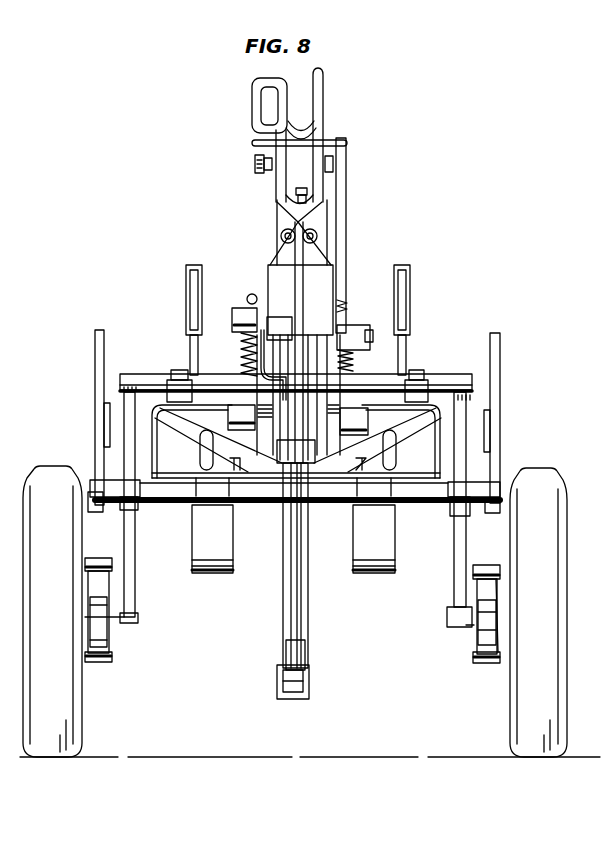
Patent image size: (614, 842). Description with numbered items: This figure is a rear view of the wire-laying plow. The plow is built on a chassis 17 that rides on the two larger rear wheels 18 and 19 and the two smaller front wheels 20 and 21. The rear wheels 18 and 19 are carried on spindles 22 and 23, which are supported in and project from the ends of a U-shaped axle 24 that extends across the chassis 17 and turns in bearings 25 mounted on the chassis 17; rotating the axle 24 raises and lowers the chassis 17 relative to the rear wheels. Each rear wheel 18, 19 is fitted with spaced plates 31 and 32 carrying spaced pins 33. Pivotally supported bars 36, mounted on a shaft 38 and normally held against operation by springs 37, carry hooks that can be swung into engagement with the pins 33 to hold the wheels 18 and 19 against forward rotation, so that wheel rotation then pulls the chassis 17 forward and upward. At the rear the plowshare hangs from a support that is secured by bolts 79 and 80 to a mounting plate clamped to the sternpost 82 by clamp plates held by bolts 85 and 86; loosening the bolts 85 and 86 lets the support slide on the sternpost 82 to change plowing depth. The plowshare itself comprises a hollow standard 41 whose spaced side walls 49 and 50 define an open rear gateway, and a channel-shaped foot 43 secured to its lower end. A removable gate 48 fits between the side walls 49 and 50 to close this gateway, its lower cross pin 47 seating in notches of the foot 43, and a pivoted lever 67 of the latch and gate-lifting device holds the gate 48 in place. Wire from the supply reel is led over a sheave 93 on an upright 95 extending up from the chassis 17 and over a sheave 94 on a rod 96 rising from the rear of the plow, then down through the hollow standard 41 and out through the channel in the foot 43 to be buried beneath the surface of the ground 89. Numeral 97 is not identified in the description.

The chassis 17 is at (450, 441).
The rear wheel 18 is at (560, 728).
The rear wheel 19 is at (81, 727).
The front wheel 20 is at (374, 573).
The front wheel 21 is at (208, 573).
The spindle 22 is at (448, 620).
The spindle 23 is at (136, 622).
The U-shaped axle 24 is at (138, 374).
The bearing 25 is at (176, 370).
The plate 31 is at (478, 635).
The plate 32 is at (496, 665).
The pin 33 is at (99, 566).
The bar 36 is at (97, 381).
The spring 37 is at (243, 362).
The shaft 38 is at (415, 505).
The hollow standard 41 is at (309, 552).
The foot 43 is at (310, 694).
The cross pin 47 is at (302, 665).
The removable gate 48 is at (297, 623).
The side wall 49 is at (291, 600).
The side wall 50 is at (301, 600).
The lever 67 is at (258, 350).
The bolt 79 is at (278, 318).
The bolt 80 is at (362, 436).
The sternpost 82 is at (325, 270).
The bolt 85 is at (247, 306).
The bolt 86 is at (233, 408).
The ground 89 is at (262, 757).
The sheave 93 is at (304, 134).
The sheave 94 is at (320, 160).
The upright 95 is at (280, 234).
The rod 96 is at (284, 270).
The lever bar 97 is at (348, 222).